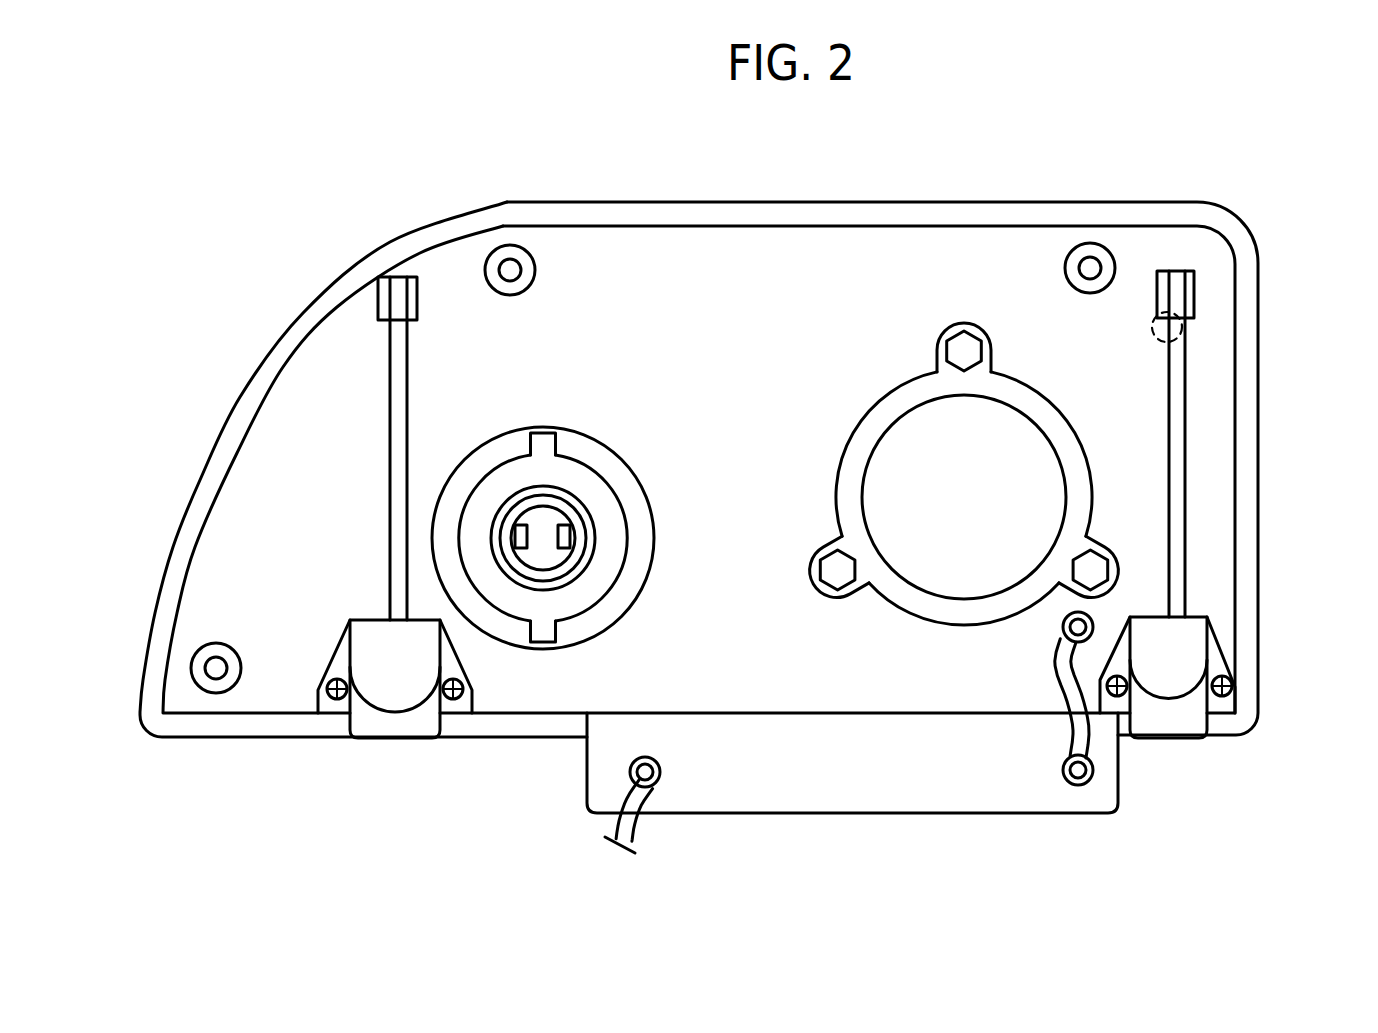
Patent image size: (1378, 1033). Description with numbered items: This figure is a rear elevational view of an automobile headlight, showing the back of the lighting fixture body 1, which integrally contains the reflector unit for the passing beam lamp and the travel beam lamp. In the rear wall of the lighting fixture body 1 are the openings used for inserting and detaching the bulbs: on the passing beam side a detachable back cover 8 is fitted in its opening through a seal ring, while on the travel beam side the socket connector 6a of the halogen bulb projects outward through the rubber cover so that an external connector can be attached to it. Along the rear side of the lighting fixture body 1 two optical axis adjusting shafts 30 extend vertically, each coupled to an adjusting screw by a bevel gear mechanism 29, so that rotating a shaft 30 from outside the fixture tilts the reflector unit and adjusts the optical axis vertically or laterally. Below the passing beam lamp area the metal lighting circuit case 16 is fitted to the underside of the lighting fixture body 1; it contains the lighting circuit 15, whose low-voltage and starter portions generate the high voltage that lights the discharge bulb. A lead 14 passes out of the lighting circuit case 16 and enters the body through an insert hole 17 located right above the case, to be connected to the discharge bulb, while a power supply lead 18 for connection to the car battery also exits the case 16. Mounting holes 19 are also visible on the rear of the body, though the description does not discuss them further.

The lighting fixture body 1 is at (745, 245).
The mounting hole 19 is at (512, 268).
The optical axis adjusting shaft 30 is at (398, 397).
The bevel gear mechanism 29 is at (395, 680).
The socket connector 6a is at (552, 522).
The back cover 8 is at (1043, 467).
The lighting circuit 15 is at (977, 730).
The lighting circuit case 16 is at (972, 797).
The power supply lead 18 is at (633, 823).
The lead 14 is at (1211, 730).
The insert hole 17 is at (1097, 626).